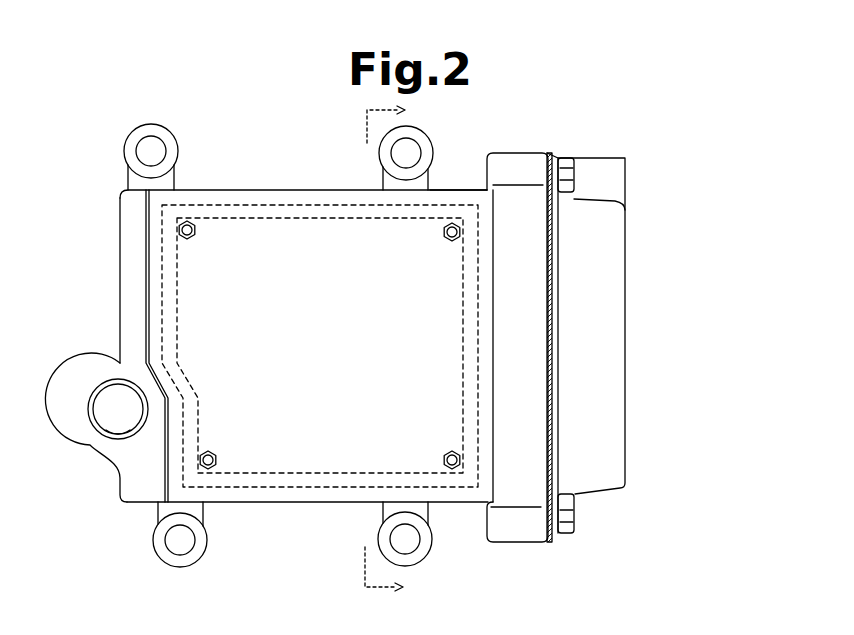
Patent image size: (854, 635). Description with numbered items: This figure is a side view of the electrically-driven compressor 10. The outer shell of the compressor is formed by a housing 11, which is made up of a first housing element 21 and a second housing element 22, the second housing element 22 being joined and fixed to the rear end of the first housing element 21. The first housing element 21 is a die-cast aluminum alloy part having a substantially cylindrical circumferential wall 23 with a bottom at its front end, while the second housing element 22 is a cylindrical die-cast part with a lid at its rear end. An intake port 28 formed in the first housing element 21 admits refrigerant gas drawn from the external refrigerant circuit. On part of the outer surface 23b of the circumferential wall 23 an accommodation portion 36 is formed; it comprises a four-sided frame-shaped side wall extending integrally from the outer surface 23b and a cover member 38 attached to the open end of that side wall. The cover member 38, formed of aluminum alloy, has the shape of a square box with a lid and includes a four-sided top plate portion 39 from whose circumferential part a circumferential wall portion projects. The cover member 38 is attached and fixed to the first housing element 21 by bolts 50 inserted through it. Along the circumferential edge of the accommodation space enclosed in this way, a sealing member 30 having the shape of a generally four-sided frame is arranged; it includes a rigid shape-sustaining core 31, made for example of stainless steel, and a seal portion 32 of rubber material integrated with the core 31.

The electrically-driven compressor 10 is at (667, 157).
The housing 11 is at (483, 580).
The first housing element 21 is at (509, 545).
The second housing element 22 is at (552, 537).
The circumferential wall 23 is at (290, 505).
The outer surface of the circumferential wall 23b is at (125, 243).
The intake port 28 is at (114, 432).
The sealing member 30 is at (237, 278).
The core 31 is at (177, 293).
The seal portion 32 is at (162, 322).
The accommodation portion 36 is at (260, 518).
The cover member 38 is at (310, 189).
The top plate portion 39 is at (452, 200).
The bolts 50 is at (196, 233).